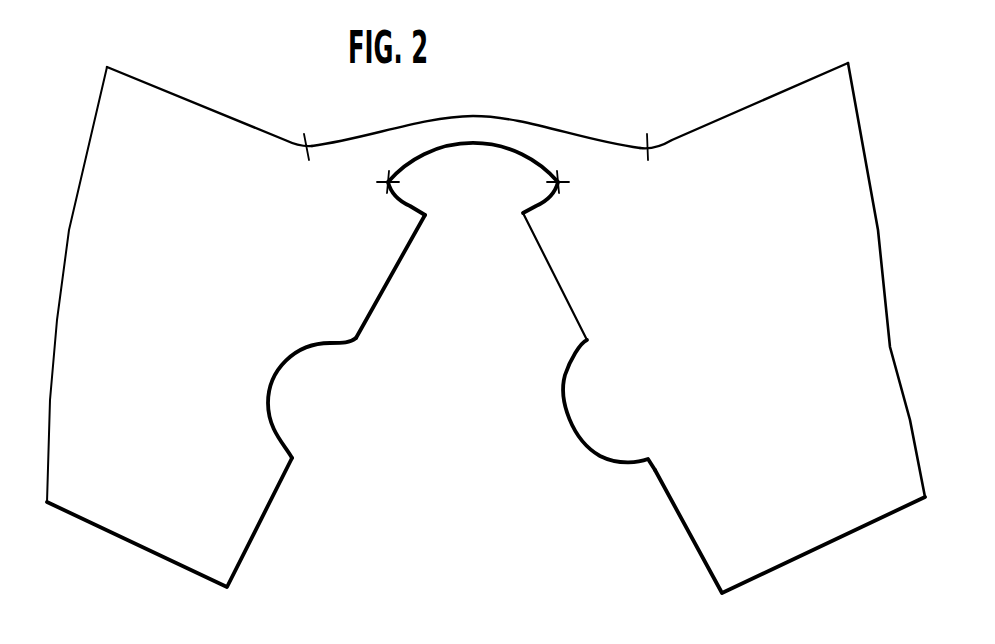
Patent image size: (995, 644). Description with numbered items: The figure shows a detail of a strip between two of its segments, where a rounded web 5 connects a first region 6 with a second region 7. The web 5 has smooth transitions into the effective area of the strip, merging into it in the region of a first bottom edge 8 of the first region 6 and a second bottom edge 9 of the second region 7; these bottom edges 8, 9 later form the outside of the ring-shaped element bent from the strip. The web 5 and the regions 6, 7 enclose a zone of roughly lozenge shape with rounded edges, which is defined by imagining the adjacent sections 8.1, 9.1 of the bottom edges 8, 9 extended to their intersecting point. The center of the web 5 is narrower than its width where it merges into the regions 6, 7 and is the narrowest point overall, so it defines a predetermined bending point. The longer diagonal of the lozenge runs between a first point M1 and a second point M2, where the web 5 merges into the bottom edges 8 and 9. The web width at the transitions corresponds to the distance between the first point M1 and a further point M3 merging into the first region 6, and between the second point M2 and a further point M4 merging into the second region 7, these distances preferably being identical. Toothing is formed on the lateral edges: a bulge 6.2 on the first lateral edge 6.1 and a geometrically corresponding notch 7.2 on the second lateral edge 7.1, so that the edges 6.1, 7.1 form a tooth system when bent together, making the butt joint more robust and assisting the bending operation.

The web 5 is at (494, 137).
The first region 6 is at (839, 546).
The second region 7 is at (136, 548).
The first bottom edge 8 is at (761, 108).
The second bottom edge 9 is at (189, 101).
The first lateral edge 6.1 is at (568, 294).
The bulge 6.2 is at (594, 449).
The second lateral edge 7.1 is at (395, 293).
The notch 7.2 is at (274, 412).
The adjacent section of first bottom edge 8.1 is at (548, 203).
The adjacent section of second bottom edge 9.1 is at (412, 204).
The first point M1 is at (565, 192).
The second point M2 is at (383, 192).
The further point M3 is at (657, 158).
The further point M4 is at (300, 157).